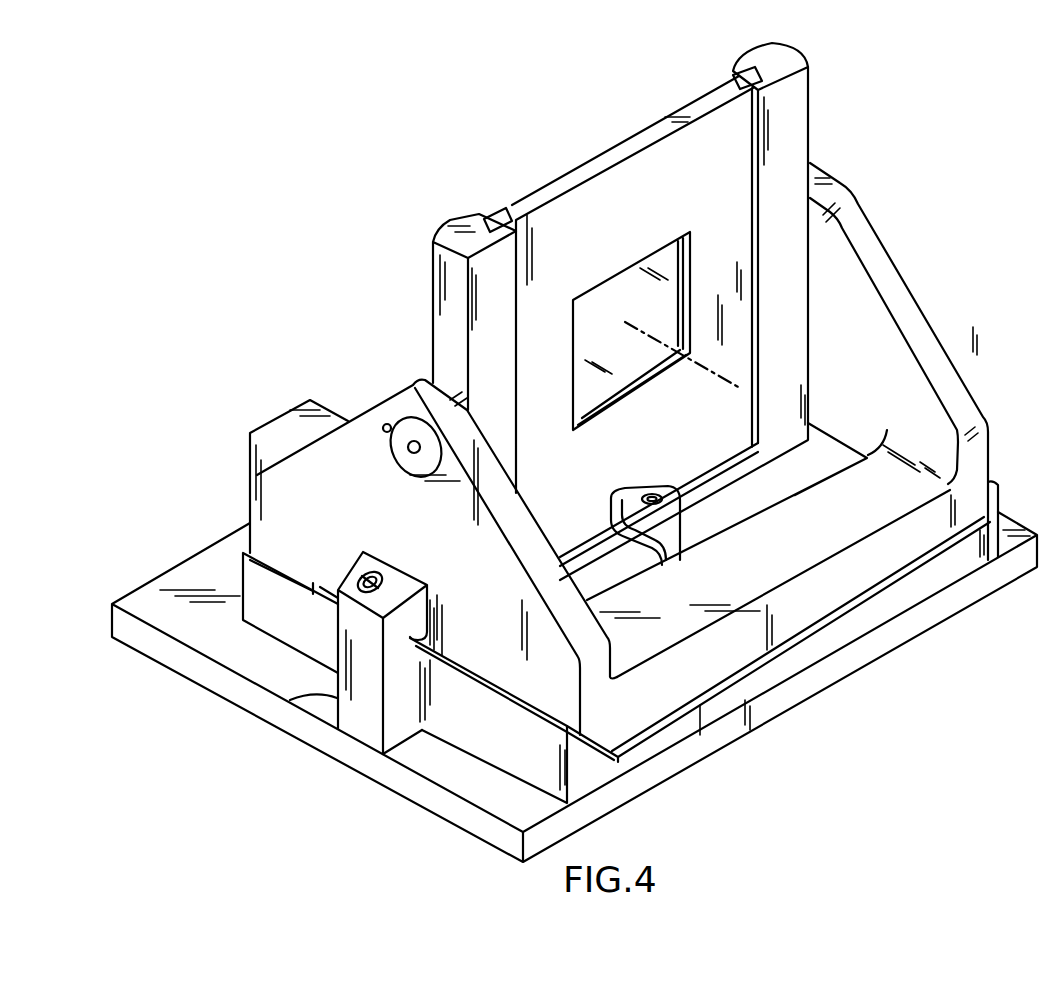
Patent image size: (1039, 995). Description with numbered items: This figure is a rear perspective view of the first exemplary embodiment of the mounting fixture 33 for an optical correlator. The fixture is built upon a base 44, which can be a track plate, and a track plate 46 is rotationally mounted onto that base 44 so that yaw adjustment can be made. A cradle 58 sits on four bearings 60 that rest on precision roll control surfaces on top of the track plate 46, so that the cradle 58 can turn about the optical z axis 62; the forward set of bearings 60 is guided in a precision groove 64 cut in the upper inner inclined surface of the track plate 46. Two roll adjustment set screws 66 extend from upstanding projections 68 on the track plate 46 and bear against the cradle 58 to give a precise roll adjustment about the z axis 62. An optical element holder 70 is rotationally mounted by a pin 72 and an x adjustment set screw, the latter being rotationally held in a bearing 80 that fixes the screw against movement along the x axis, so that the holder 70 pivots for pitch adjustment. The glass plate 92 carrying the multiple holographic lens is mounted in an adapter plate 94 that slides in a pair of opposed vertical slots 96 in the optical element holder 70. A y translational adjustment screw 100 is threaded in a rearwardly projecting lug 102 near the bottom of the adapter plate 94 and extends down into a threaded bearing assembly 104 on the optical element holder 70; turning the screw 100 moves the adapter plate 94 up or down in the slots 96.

The mounting fixture 33 is at (905, 213).
The base 44 is at (229, 587).
The track plate 46 is at (413, 720).
The cradle 58 is at (481, 559).
The bearings 60 is at (321, 598).
The optical z axis 62 is at (730, 383).
The precision groove 64 is at (296, 586).
The roll adjustment set screws 66 is at (369, 577).
The upstanding projections 68 is at (333, 698).
The optical element holder 70 is at (810, 110).
The pin 72 is at (410, 443).
The bearing 80 is at (403, 458).
The glass plate 92 is at (621, 335).
The adapter plate 94 is at (646, 228).
The opposed vertical slots 96 is at (730, 75).
The y translational adjustment screw 100 is at (654, 497).
The rearwardly projecting lug 102 is at (688, 498).
The threaded bearing assembly 104 is at (700, 548).